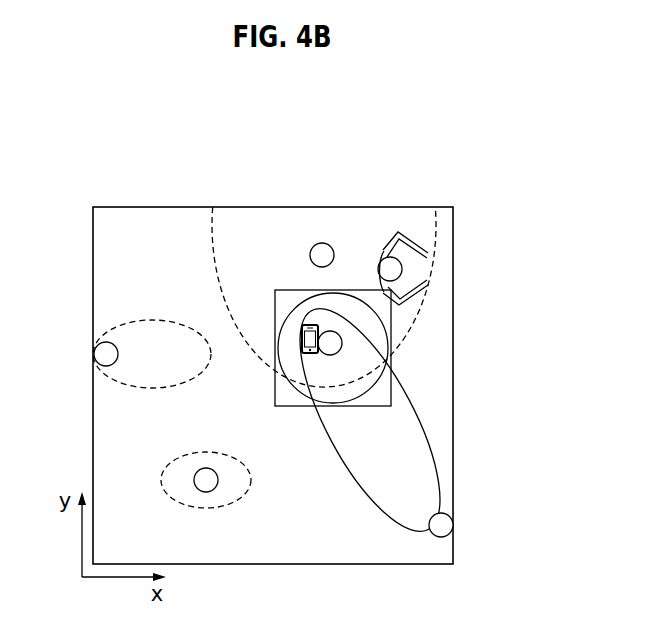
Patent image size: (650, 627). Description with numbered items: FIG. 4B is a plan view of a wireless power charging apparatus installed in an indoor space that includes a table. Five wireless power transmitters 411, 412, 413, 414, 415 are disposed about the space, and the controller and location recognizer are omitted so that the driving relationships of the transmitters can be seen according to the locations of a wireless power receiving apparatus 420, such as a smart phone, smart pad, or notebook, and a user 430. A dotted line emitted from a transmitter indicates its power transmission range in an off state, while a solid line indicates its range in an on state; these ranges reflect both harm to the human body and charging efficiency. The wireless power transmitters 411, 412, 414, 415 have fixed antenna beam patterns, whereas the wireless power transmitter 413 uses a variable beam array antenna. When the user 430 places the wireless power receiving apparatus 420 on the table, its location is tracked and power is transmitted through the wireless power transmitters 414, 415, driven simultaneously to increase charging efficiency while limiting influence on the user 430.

The wireless power transmitter 411 is at (108, 342).
The wireless power transmitter 412 is at (206, 493).
The wireless power transmitter 413 is at (321, 243).
The wireless power transmitter 414 is at (342, 340).
The wireless power transmitter 415 is at (451, 534).
The wireless power receiving apparatus 420 is at (309, 324).
The user 430 is at (384, 251).